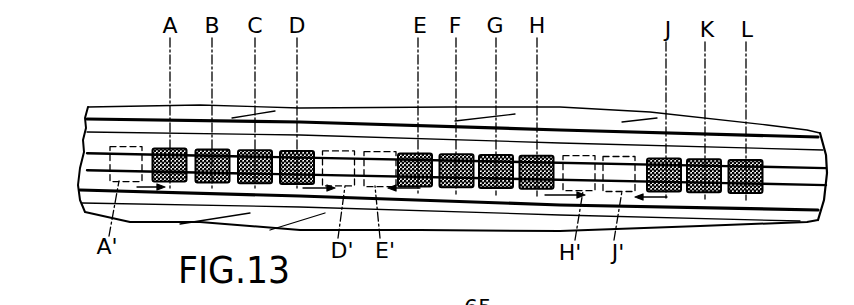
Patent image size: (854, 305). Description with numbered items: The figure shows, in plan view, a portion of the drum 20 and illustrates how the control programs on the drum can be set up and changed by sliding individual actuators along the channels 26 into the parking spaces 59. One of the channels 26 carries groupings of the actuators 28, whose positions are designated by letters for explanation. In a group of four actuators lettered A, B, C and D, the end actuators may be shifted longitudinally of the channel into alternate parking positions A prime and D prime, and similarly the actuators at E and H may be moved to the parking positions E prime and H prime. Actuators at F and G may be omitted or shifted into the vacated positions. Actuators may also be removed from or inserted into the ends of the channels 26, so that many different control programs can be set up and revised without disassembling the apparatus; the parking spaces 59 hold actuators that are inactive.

The drum 20 is at (693, 199).
The channels 26 is at (100, 198).
The actuators 28 is at (527, 189).
The parking spaces 59 is at (122, 146).